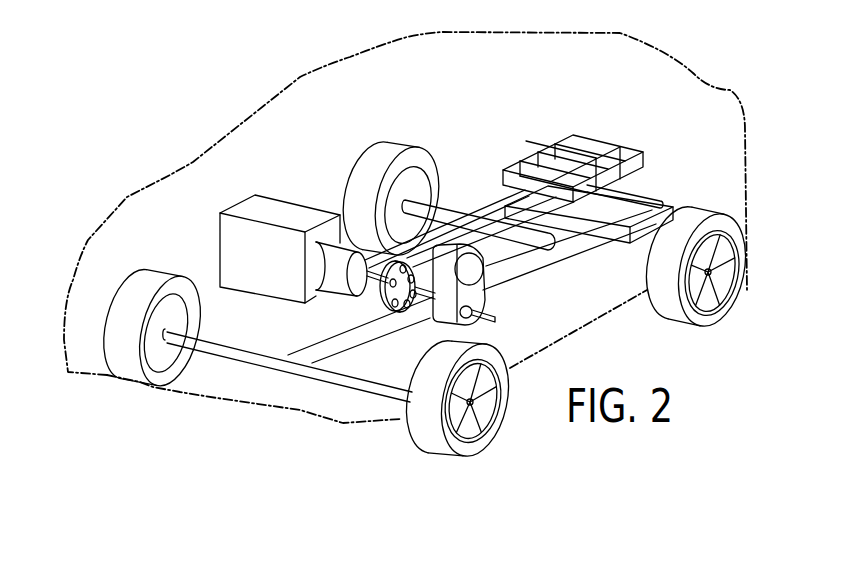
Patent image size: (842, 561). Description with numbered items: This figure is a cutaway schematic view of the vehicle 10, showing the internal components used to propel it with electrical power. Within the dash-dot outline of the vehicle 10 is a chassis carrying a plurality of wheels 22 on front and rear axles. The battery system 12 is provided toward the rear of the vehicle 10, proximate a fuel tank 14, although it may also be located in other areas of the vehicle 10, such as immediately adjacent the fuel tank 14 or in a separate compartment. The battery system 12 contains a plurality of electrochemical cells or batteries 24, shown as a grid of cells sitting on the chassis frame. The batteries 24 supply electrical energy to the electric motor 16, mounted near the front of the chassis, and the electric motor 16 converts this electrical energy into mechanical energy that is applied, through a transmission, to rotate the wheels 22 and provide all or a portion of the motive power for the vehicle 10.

The vehicle 10 is at (677, 48).
The battery system 12 is at (561, 143).
The fuel tank 14 is at (252, 210).
The electric motor 16 is at (327, 257).
The wheels 22 is at (715, 313).
The batteries 24 is at (555, 138).